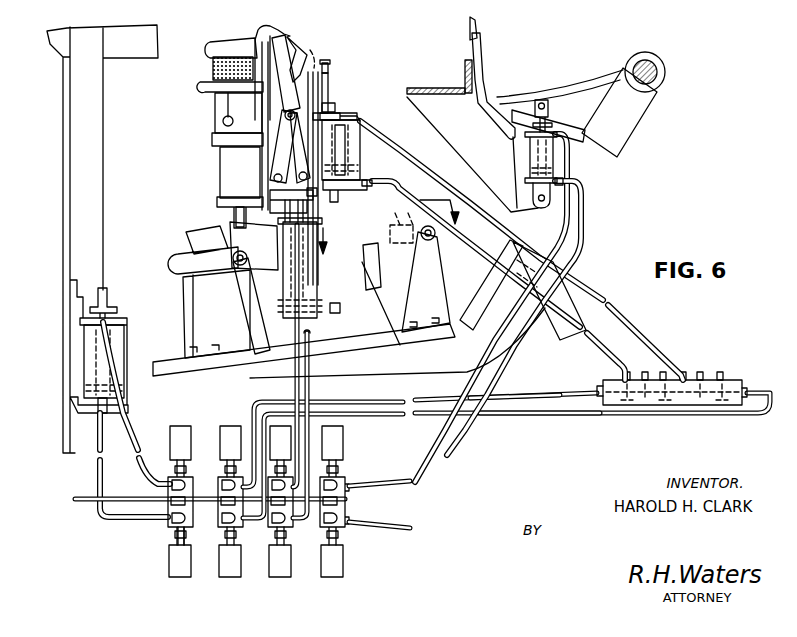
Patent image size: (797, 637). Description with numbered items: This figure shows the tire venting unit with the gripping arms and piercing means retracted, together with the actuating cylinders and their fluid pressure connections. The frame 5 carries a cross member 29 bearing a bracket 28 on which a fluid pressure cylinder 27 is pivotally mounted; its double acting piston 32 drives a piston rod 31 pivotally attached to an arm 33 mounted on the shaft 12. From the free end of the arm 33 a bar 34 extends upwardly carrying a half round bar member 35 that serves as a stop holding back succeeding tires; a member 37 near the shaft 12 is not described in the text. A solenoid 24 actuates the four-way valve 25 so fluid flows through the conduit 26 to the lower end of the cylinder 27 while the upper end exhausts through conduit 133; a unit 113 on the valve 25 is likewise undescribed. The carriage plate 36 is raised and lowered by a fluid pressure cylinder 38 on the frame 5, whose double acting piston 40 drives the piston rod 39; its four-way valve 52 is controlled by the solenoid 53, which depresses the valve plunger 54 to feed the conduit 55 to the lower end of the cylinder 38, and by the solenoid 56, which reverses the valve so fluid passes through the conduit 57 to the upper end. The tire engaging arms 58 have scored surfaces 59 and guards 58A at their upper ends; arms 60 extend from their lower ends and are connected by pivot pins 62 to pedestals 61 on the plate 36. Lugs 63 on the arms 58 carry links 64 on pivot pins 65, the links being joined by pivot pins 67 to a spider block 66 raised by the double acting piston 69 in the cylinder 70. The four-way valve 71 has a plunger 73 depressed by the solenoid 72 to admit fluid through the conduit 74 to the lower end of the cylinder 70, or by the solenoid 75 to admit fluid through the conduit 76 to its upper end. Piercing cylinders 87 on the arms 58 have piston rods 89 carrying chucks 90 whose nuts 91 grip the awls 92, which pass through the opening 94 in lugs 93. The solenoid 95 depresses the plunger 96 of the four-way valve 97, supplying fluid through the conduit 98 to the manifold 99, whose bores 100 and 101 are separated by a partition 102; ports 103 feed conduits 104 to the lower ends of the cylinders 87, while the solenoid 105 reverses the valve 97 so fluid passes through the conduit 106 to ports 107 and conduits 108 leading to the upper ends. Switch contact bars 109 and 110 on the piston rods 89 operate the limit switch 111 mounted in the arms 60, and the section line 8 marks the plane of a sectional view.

The frame 5 is at (77, 213).
The section line 8 is at (397, 236).
The shaft 12 is at (660, 72).
The solenoid 24 is at (333, 568).
The valve 25 is at (345, 505).
The conduit 26 is at (570, 215).
The fluid pressure cylinder 27 is at (567, 183).
The bracket 28 is at (443, 125).
The cross member 29 is at (460, 78).
The piston rod 31 is at (593, 123).
The double acting piston 32 is at (557, 167).
The arm 33 is at (573, 95).
The bar 34 is at (480, 62).
The half round bar member 35 is at (478, 26).
The plate 36 is at (377, 340).
The arm 37 is at (640, 113).
The fluid pressure cylinder 38 is at (117, 337).
The piston rod 39 is at (107, 290).
The double acting piston 40 is at (117, 387).
The solenoid operated 4-way valve 52 is at (188, 490).
The solenoid 53 is at (178, 570).
The valve plunger 54 is at (176, 533).
The conduit 55 is at (98, 467).
The solenoid 56 is at (183, 432).
The conduit 57 is at (133, 425).
The arms 58 is at (384, 184).
The guards 58A is at (264, 36).
The scored or knurled surfaces 59 is at (213, 60).
The arms 60 is at (200, 242).
The pedestals 61 is at (190, 310).
The pivot pins 62 is at (247, 254).
The lugs 63 is at (295, 97).
The links 64 is at (275, 165).
The pivot pins 65 is at (222, 121).
The spider block 66 is at (270, 192).
The pivot pins 67 is at (309, 194).
The double acting piston 69 is at (340, 305).
The fluid pressure cylinder 70 is at (317, 283).
The solenoid operated 4-way valve 71 is at (268, 522).
The solenoid 72 is at (283, 577).
The valve plunger 73 is at (283, 537).
The conduit 74 is at (311, 368).
The solenoid 75 is at (283, 437).
The conduit 76 is at (293, 395).
The fluid pressure cylinders 87 is at (227, 162).
The piston rods 89 is at (233, 230).
The chucks 90 is at (340, 112).
The nuts 91 is at (333, 102).
The awls 92 is at (208, 94).
The lugs 93 is at (330, 68).
The opening 94 is at (210, 78).
The solenoid 95 is at (238, 572).
The plunger 96 is at (228, 462).
The 4-way valve 97 is at (222, 505).
The conduit 98 is at (555, 390).
The manifold 99 is at (740, 387).
The bore 100 is at (633, 400).
The bore 101 is at (725, 397).
The partition 102 is at (673, 403).
The ports 103 is at (633, 377).
The conduits 104 is at (588, 341).
The solenoid 105 is at (232, 432).
The conduit 106 is at (537, 417).
The ports 107 is at (710, 377).
The conduits 108 is at (627, 317).
The switch contact bar 109 is at (400, 345).
The switch contact bar 110 is at (379, 270).
The limit switch 111 is at (418, 240).
The solenoid 113 is at (343, 450).
The conduit 133 is at (582, 237).